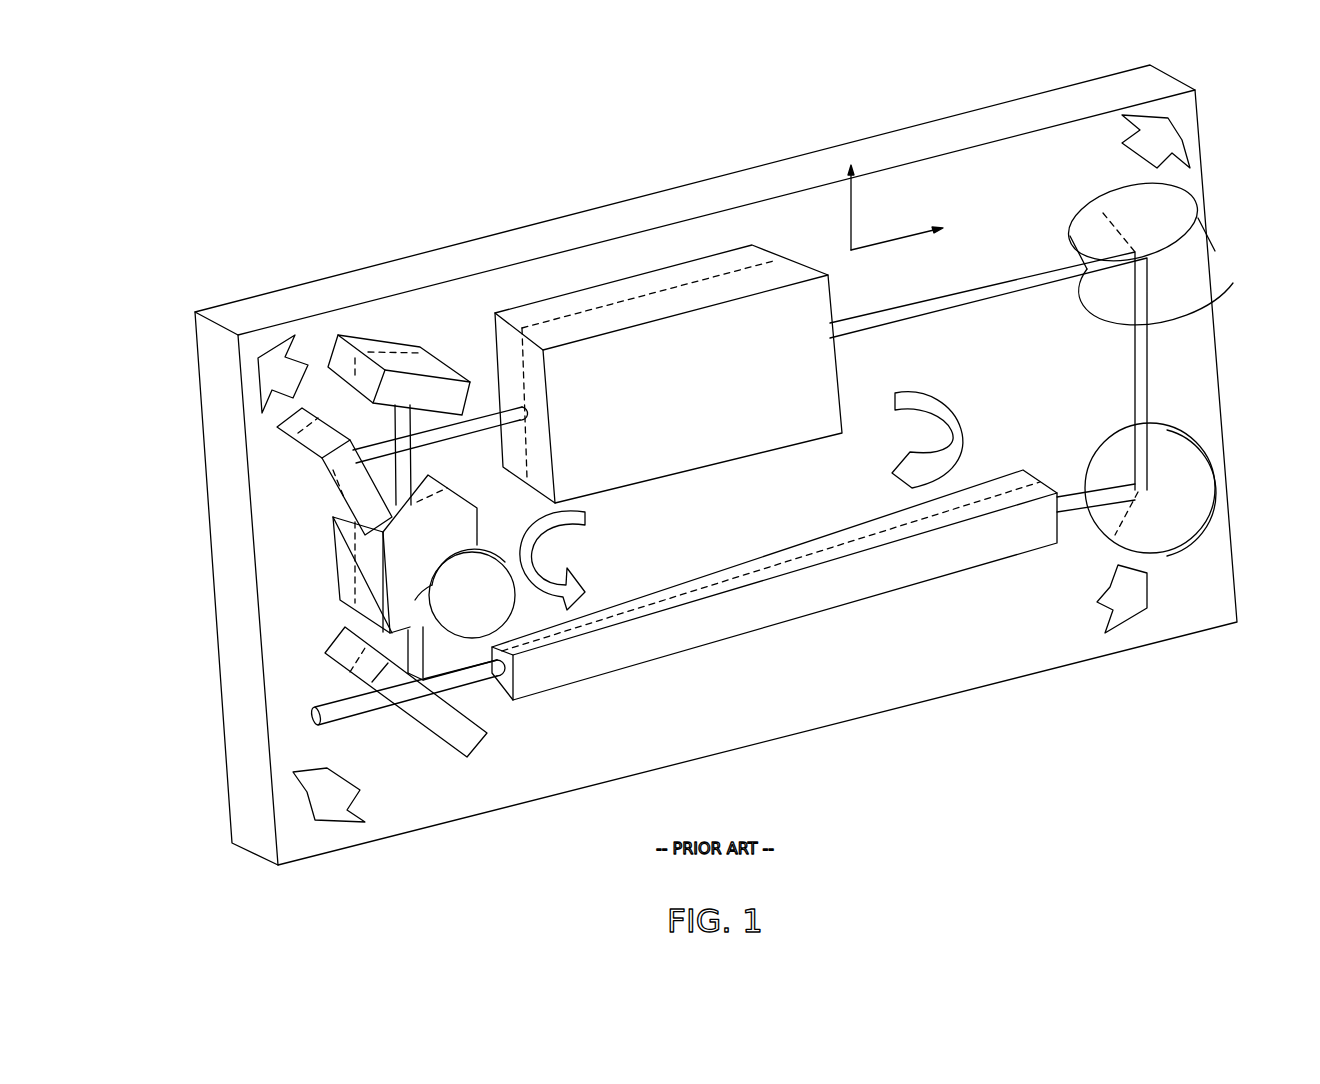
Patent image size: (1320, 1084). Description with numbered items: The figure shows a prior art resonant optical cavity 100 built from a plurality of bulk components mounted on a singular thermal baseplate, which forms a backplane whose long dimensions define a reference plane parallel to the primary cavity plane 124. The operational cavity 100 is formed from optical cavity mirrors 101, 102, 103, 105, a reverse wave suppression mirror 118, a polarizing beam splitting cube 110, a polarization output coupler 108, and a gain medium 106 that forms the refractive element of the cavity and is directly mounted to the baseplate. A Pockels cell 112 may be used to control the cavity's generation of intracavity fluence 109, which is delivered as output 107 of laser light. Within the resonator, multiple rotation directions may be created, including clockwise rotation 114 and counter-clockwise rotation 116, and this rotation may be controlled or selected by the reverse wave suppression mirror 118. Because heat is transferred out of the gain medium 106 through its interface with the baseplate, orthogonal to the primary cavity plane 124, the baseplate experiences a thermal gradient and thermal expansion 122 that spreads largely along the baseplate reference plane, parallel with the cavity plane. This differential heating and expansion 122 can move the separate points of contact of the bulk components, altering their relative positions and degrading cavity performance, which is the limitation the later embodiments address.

The resonant optical cavity 100 is at (320, 158).
The optical cavity mirror 101 is at (270, 488).
The optical cavity mirror 102 is at (391, 340).
The optical cavity mirror 103 is at (1082, 206).
The optical cavity mirror 105 is at (1187, 412).
The gain medium 106 is at (773, 611).
The output 107 is at (316, 691).
The polarization output coupler 108 is at (436, 737).
The intracavity fluence 109 is at (472, 700).
The polarizing beam splitting cube 110 is at (290, 543).
The Pockels cell 112 is at (626, 280).
The clockwise rotation 114 is at (972, 407).
The counter-clockwise rotation 116 is at (600, 519).
The reverse wave suppression mirror 118 is at (454, 610).
The thermal expansion 122 is at (246, 382).
The primary cavity plane 124 is at (868, 200).